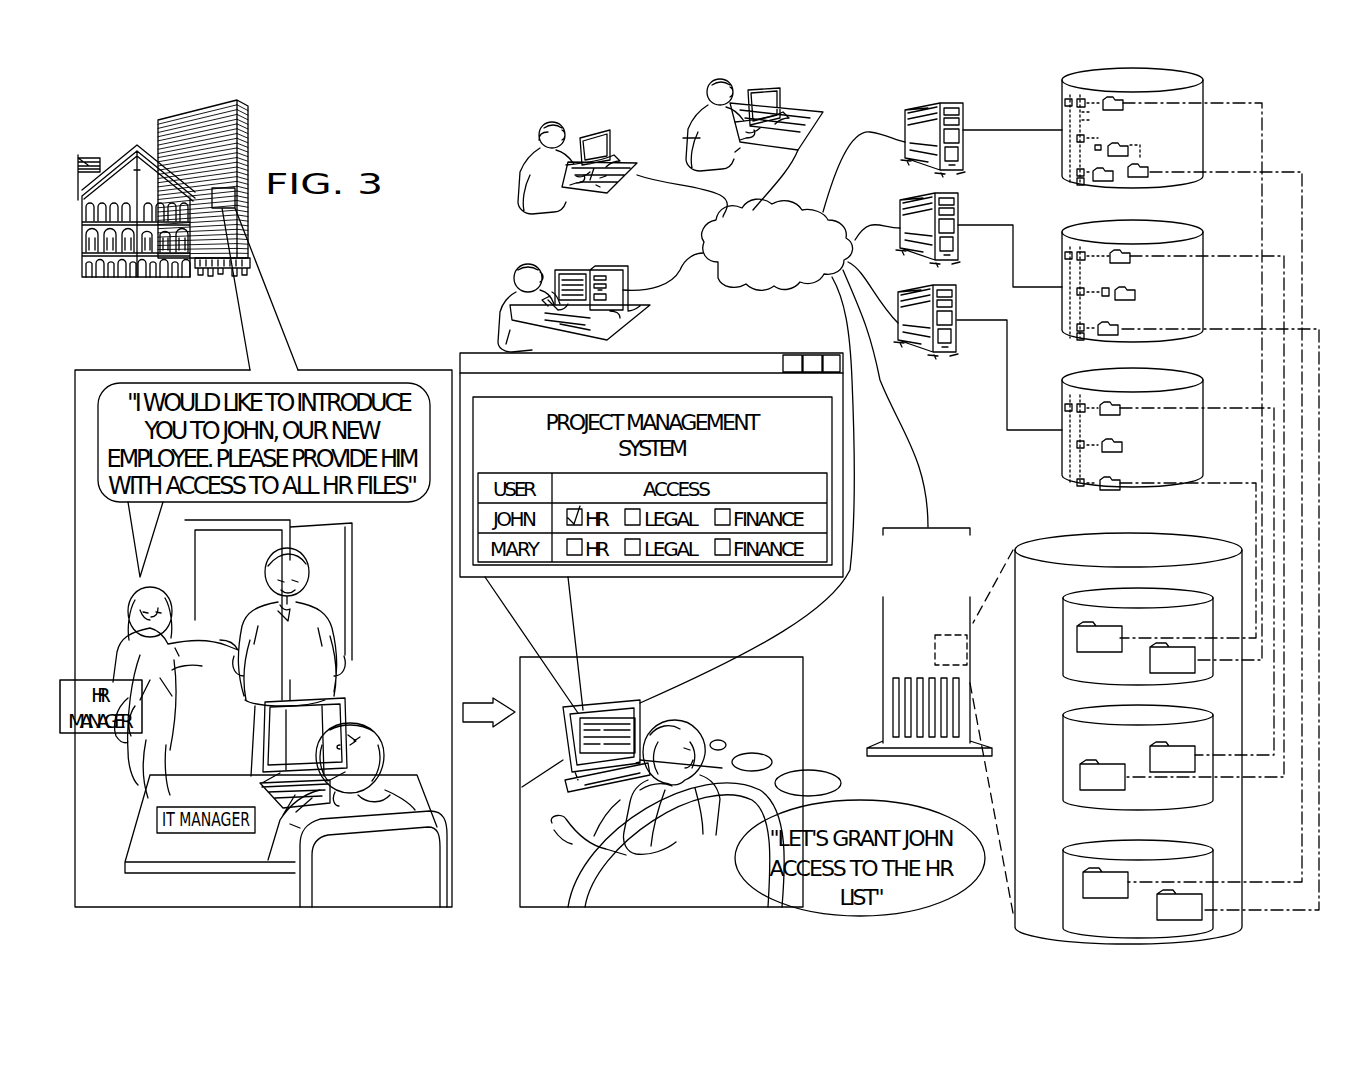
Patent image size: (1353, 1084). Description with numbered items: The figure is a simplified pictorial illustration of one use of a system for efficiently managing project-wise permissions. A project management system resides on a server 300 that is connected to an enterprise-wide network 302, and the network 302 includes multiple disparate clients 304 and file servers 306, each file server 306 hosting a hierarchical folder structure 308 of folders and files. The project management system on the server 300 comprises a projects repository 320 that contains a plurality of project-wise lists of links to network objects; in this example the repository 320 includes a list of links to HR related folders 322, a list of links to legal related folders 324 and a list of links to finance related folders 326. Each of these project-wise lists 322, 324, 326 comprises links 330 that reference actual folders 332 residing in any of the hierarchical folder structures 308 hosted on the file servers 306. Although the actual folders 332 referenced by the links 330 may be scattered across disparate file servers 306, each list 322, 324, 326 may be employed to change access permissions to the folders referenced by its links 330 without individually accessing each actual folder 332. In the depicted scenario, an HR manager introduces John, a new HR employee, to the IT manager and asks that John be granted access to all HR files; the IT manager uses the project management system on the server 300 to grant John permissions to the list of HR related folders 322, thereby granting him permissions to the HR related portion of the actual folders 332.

The server 300 is at (883, 656).
The enterprise-wide network 302 is at (753, 282).
The clients 304 is at (320, 720).
The file servers 306 is at (905, 122).
The hierarchical folder structure 308 is at (1062, 113).
The projects repository 320 is at (1047, 533).
The list of links to HR related folders 322 is at (1095, 678).
The list of links to legal related folders 324 is at (1100, 798).
The list of links to finance related folders 326 is at (1207, 870).
The links 330 is at (1150, 655).
The actual folders 332 is at (1118, 143).